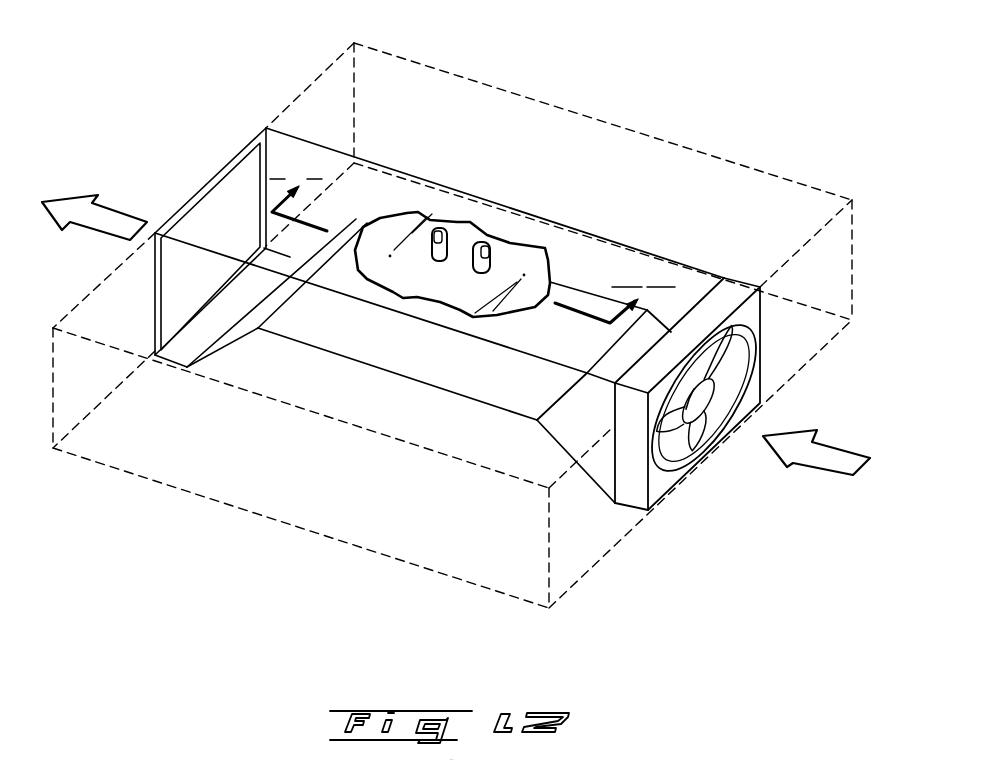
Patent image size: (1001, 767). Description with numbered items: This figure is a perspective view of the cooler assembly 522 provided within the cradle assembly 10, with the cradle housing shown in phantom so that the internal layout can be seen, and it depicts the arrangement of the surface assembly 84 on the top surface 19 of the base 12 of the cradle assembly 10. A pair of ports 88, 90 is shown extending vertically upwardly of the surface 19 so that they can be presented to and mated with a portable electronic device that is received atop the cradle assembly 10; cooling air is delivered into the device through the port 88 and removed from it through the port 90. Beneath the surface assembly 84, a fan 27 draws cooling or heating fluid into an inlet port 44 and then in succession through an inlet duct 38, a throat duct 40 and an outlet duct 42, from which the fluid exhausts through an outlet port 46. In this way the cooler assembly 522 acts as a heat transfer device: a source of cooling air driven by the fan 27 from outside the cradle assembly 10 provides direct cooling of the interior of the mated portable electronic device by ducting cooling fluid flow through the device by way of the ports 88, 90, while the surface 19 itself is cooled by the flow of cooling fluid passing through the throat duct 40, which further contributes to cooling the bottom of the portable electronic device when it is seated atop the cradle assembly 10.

The cradle assembly 10 is at (474, 325).
The base 12 is at (853, 302).
The top surface 19 is at (452, 277).
The fan 27 is at (713, 427).
The inlet duct 38 is at (572, 427).
The throat duct 40 is at (415, 319).
The outlet duct 42 is at (231, 340).
The inlet port 44 is at (704, 403).
The outlet port 46 is at (223, 163).
The surface assembly 84 is at (413, 337).
The port 88 is at (482, 274).
The port 90 is at (432, 262).
The cooler assembly 522 is at (471, 172).